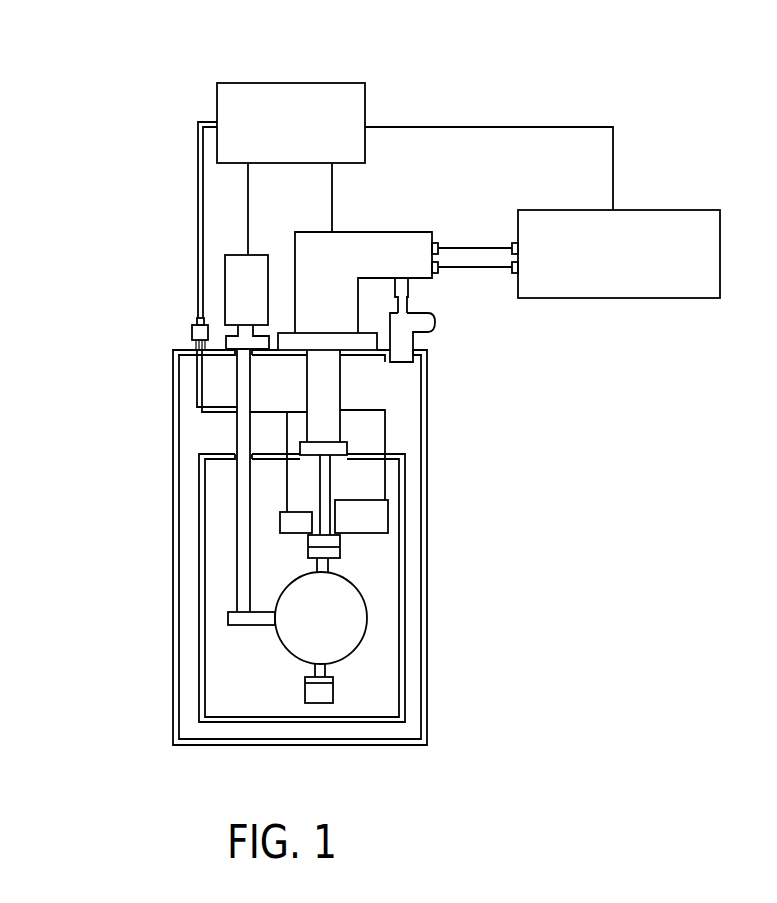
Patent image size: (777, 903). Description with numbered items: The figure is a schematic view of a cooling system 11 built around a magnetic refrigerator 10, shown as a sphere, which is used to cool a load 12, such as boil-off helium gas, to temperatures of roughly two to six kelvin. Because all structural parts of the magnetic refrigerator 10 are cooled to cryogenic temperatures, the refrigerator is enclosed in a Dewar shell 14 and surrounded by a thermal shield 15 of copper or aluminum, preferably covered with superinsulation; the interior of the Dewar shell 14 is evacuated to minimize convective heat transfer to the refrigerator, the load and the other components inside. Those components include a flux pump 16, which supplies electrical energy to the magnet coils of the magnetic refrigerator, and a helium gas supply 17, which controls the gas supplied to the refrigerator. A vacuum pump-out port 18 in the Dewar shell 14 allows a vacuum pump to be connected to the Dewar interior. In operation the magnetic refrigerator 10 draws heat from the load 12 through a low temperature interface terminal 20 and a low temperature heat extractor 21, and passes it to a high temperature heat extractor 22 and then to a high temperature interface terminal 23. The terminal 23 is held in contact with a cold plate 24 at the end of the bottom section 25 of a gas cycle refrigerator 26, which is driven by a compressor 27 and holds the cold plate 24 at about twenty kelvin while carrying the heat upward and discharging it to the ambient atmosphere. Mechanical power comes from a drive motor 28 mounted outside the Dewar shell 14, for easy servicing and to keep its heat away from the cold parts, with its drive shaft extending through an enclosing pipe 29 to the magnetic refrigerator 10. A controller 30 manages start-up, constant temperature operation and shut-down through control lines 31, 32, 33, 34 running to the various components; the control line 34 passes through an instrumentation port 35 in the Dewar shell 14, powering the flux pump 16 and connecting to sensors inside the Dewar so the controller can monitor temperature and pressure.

The magnetic refrigerator 10 is at (278, 643).
The cooling system 11 is at (427, 410).
The load 12 is at (333, 703).
The Dewar shell 14 is at (173, 503).
The thermal shield 15 is at (200, 570).
The flux pump 16 is at (388, 517).
The helium gas supply 17 is at (280, 520).
The vacuum pump-out port 18 is at (435, 326).
The low temperature interface terminal 20 is at (305, 688).
The low temperature heat extractor 21 is at (325, 670).
The high temperature heat extractor 22 is at (328, 565).
The high temperature interface terminal 23 is at (340, 550).
The cold plate 24 is at (305, 540).
The bottom section 25 is at (330, 483).
The gas cycle refrigerator 26 is at (355, 232).
The compressor 27 is at (617, 298).
The drive motor 28 is at (225, 283).
The enclosing pipe 29 is at (237, 443).
The controller 30 is at (288, 83).
The control line 31 is at (532, 123).
The control line 32 is at (332, 190).
The control line 33 is at (248, 207).
The control line 34 is at (198, 197).
The instrumentation port 35 is at (192, 333).